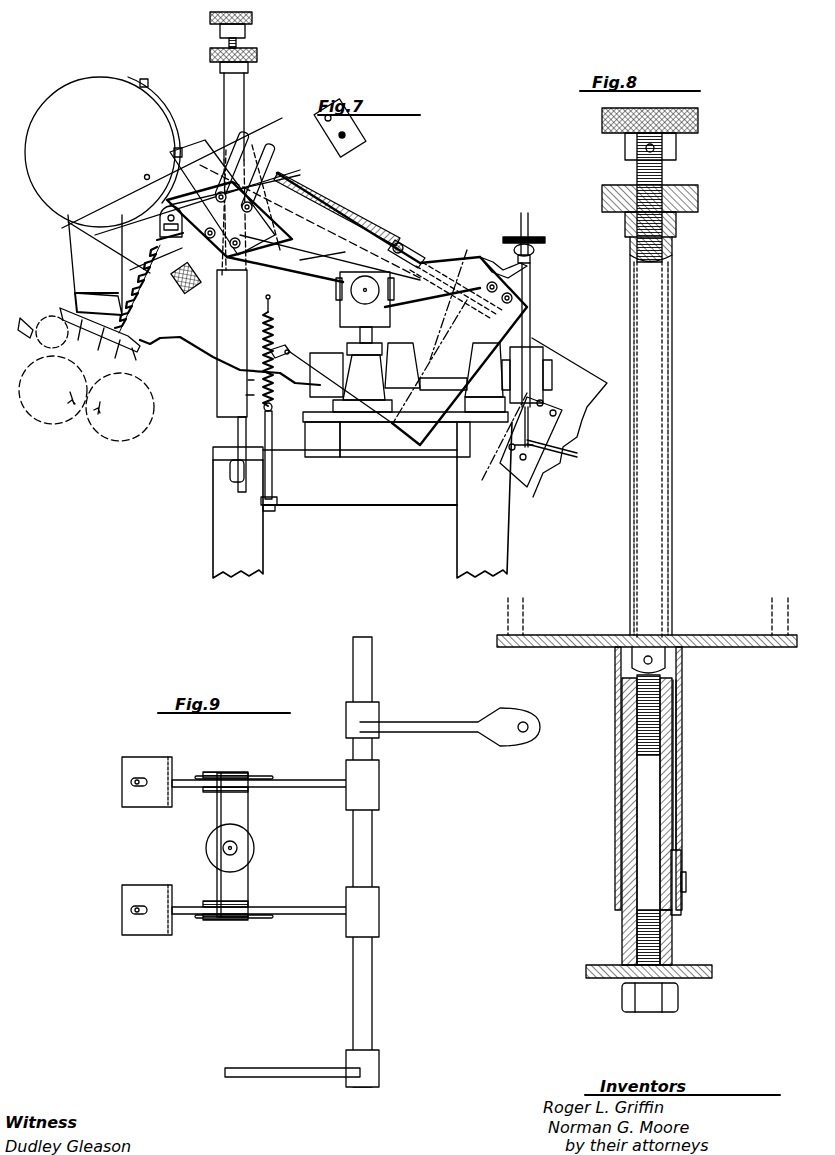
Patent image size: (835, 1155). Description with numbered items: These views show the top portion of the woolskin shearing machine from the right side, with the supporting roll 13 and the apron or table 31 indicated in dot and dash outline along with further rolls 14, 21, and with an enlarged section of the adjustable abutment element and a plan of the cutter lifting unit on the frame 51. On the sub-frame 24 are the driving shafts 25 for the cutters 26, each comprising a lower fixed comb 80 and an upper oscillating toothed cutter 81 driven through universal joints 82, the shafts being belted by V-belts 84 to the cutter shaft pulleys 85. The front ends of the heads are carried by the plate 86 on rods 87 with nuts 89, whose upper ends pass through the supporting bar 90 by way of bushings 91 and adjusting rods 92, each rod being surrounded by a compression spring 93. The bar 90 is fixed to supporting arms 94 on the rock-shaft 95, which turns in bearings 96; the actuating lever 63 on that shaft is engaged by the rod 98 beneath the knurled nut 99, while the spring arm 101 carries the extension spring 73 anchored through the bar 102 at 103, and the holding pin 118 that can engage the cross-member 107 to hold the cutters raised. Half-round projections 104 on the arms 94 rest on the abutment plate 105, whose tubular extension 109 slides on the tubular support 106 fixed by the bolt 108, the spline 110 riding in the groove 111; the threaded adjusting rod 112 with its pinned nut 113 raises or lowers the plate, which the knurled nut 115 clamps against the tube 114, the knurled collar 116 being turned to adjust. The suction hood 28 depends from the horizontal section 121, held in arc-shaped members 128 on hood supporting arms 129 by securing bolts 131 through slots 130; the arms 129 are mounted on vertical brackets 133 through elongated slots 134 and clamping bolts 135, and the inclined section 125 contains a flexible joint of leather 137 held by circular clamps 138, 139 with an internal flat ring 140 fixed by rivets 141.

In FIG. 7, the supporting roll 13 is at (75, 322).
In FIG. 7, the roller 14 is at (50, 425).
In FIG. 7, the roller 21 is at (92, 437).
In FIG. 7, the sub-frame 24 is at (375, 421).
In FIG. 7, the driving shafts 25 is at (418, 360).
In FIG. 7, the cutters 26 is at (178, 332).
In FIG. 7, the suction hood 28 is at (72, 268).
In FIG. 7, the apron or table 31 is at (43, 330).
In FIG. 7, the frame 51 is at (215, 553).
In FIG. 7, the actuating lever 63 is at (462, 262).
In FIG. 9, the actuating lever 63 is at (432, 722).
In FIG. 7, the extension spring 73 is at (305, 404).
In FIG. 7, the lower fixed comb 80 is at (82, 337).
In FIG. 7, the upper oscillating toothed cutter 81 is at (116, 358).
In FIG. 7, the universal joints 82 is at (325, 340).
In FIG. 7, the V-belts 84 is at (560, 452).
In FIG. 7, the cutter shaft pulleys 85 is at (532, 340).
In FIG. 7, the plate 86 is at (98, 347).
In FIG. 7, the rods 87 is at (140, 277).
In FIG. 7, the nut 89 is at (138, 364).
In FIG. 7, the supporting bar 90 is at (155, 238).
In FIG. 7, the bushing 91 is at (163, 215).
In FIG. 7, the adjusting rod 92 is at (165, 215).
In FIG. 7, the compression spring 93 is at (150, 252).
In FIG. 7, the supporting arms 94 is at (300, 260).
In FIG. 9, the supporting arms 94 is at (300, 780).
In FIG. 9, the rock-shaft 95 is at (372, 683).
In FIG. 7, the bearings 96 is at (362, 278).
In FIG. 7, the rod 98 is at (525, 318).
In FIG. 7, the knurled nut 99 is at (530, 238).
In FIG. 7, the spring arm 101 is at (310, 320).
In FIG. 9, the spring arm 101 is at (300, 1079).
In FIG. 7, the bar 102 is at (305, 442).
In FIG. 7, the anchorage 103 is at (325, 534).
In FIG. 7, the half-round projections 104 is at (215, 268).
In FIG. 8, the half-round projections 104 is at (523, 617).
In FIG. 7, the abutment plate 105 is at (220, 320).
In FIG. 8, the abutment plate 105 is at (577, 636).
In FIG. 9, the abutment plate 105 is at (212, 812).
In FIG. 7, the tubular support 106 is at (215, 402).
In FIG. 8, the tubular support 106 is at (622, 925).
In FIG. 7, the cross-member 107 is at (215, 452).
In FIG. 8, the cross-member 107 is at (705, 965).
In FIG. 7, the bolt 108 is at (230, 474).
In FIG. 8, the bolt 108 is at (678, 1002).
In FIG. 7, the tubular extension 109 is at (219, 393).
In FIG. 8, the tubular extension 109 is at (680, 758).
In FIG. 8, the spline 110 is at (682, 872).
In FIG. 8, the groove 111 is at (680, 800).
In FIG. 7, the threaded adjusting rod 112 is at (238, 43).
In FIG. 8, the threaded adjusting rod 112 is at (660, 168).
In FIG. 9, the threaded adjusting rod 112 is at (290, 860).
In FIG. 8, the nut 113 is at (665, 660).
In FIG. 7, the tube 114 is at (240, 90).
In FIG. 8, the tube 114 is at (665, 465).
In FIG. 7, the knurled nut 115 is at (257, 56).
In FIG. 8, the knurled nut 115 is at (698, 200).
In FIG. 7, the knurled collar 116 is at (252, 18).
In FIG. 8, the knurled collar 116 is at (698, 122).
In FIG. 9, the knurled collar 116 is at (290, 832).
In FIG. 7, the holding pin 118 is at (238, 434).
In FIG. 7, the horizontal section 121 is at (100, 64).
In FIG. 7, the inclined section 125 is at (610, 336).
In FIG. 7, the arc-shaped members 128 is at (160, 110).
In FIG. 9, the arc-shaped members 128 is at (190, 744).
In FIG. 7, the hood supporting arms 129 is at (215, 155).
In FIG. 9, the slots 130 is at (132, 784).
In FIG. 7, the securing bolts 131 is at (165, 64).
In FIG. 7, the vertical brackets 133 is at (240, 170).
In FIG. 9, the vertical brackets 133 is at (280, 760).
In FIG. 7, the elongated slots 134 is at (250, 140).
In FIG. 7, the clamping bolts 135 is at (216, 197).
In FIG. 9, the clamping bolts 135 is at (235, 758).
In FIG. 7, the tubular section of leather 137 is at (415, 205).
In FIG. 7, the circular clamp 138 is at (352, 150).
In FIG. 7, the circular clamp 139 is at (465, 311).
In FIG. 7, the internal flat ring 140 is at (400, 243).
In FIG. 7, the rivets 141 is at (445, 242).